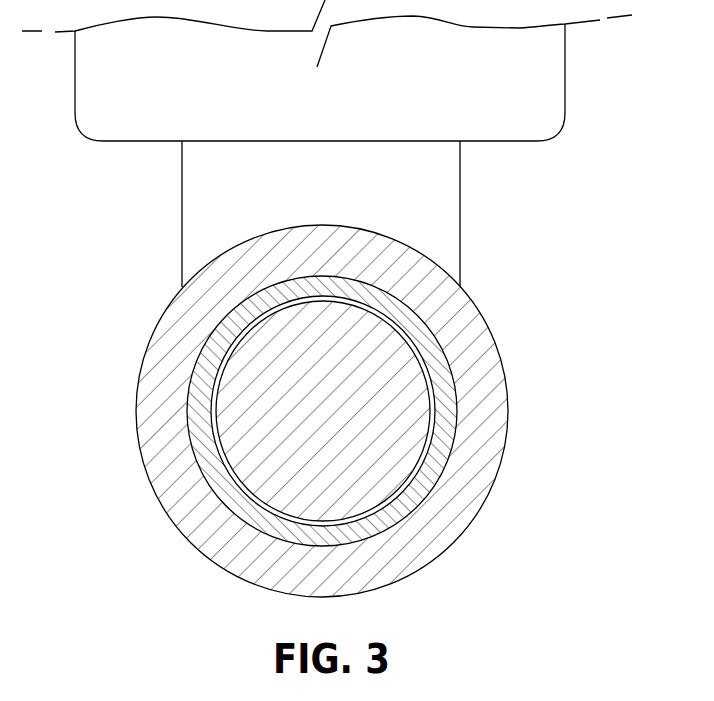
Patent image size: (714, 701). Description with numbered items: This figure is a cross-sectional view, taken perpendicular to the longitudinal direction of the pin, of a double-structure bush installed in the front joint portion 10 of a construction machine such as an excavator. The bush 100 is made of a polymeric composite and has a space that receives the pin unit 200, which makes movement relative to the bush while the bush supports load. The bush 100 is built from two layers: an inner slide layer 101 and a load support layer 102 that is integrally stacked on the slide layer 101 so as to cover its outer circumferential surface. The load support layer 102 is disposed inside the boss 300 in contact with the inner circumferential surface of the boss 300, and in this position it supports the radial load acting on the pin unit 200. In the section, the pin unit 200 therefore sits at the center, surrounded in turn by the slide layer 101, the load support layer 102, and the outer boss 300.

The joint portion 10 is at (516, 240).
The bush 100 is at (416, 411).
The slide layer 101 is at (427, 378).
The load support layer 102 is at (421, 484).
The pin unit 200 is at (250, 444).
The boss 300 is at (167, 343).